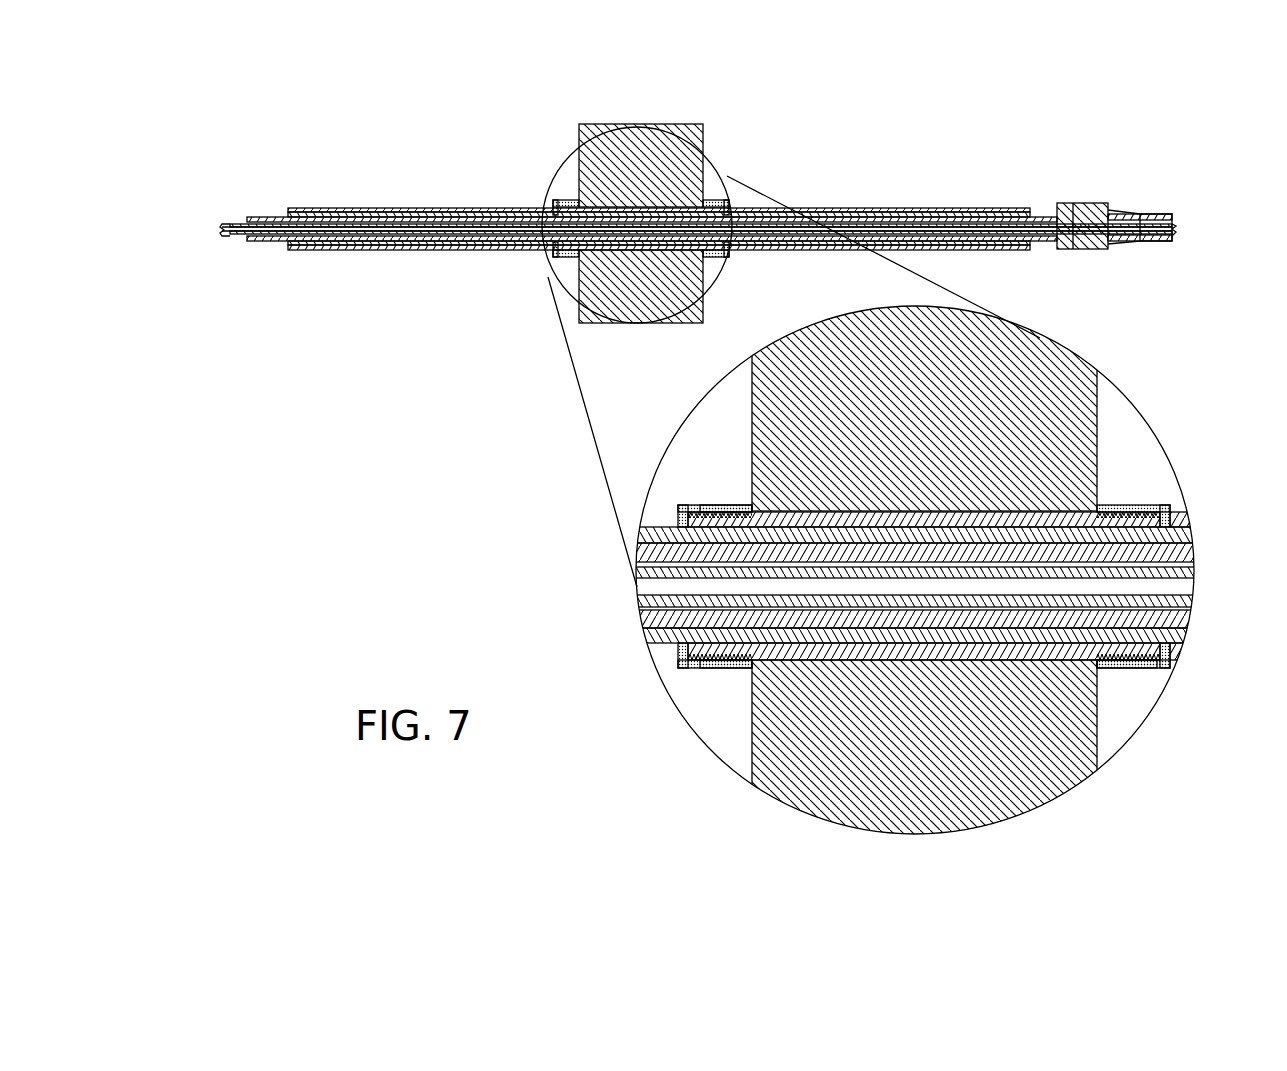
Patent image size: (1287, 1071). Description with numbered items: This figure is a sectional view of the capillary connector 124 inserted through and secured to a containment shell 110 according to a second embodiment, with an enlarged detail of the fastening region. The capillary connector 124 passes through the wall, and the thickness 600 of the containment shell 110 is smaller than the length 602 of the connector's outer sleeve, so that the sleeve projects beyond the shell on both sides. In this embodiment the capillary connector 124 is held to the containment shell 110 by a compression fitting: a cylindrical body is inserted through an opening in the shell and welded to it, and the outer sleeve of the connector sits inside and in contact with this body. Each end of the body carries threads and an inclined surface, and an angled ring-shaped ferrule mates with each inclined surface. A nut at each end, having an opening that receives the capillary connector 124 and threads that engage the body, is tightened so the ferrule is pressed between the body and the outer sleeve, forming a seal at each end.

The containment shell 110 is at (705, 129).
The capillary connector 124 is at (411, 265).
The thickness of containment shell 600 is at (703, 112).
The length of outer sleeve 602 is at (1030, 90).